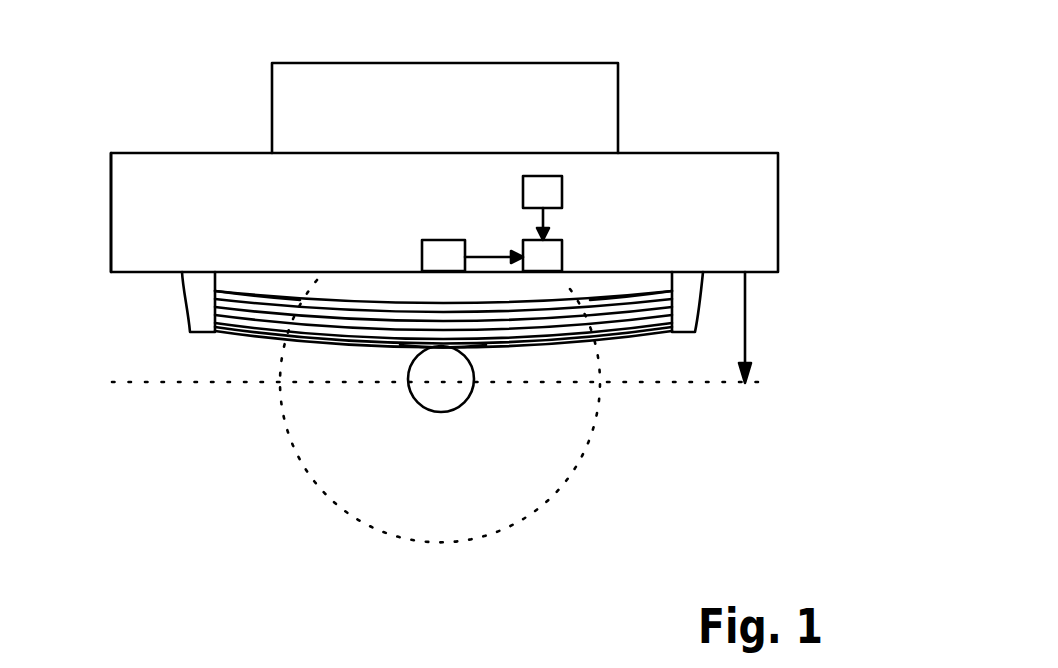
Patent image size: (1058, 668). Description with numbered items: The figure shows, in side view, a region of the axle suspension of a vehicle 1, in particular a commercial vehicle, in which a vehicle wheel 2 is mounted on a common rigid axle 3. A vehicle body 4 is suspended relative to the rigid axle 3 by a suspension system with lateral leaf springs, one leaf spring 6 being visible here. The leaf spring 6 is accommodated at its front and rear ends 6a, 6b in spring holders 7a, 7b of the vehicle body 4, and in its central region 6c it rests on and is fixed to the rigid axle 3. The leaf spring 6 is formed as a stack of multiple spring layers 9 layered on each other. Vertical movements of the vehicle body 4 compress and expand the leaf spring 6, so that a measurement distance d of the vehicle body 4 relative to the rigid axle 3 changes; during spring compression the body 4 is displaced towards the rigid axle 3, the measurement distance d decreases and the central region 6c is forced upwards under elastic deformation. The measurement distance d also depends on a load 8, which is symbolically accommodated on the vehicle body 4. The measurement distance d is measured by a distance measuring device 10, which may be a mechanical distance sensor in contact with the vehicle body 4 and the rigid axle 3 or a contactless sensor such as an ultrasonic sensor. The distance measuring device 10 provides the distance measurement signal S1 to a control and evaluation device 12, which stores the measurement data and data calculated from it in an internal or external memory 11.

The vehicle 1 is at (740, 152).
The vehicle wheel 2 is at (352, 487).
The rigid axle 3 is at (457, 402).
The vehicle body 4 is at (155, 170).
The leaf spring 6 is at (267, 333).
The front end of the leaf spring 6a is at (220, 332).
The rear end of the leaf spring 6b is at (663, 332).
The central region of the leaf spring 6c is at (425, 345).
The spring holder 7a is at (182, 290).
The spring holder 7b is at (682, 320).
The load 8 is at (618, 85).
The spring layer 9 is at (290, 337).
The distance measuring device 10 is at (425, 243).
The memory 11 is at (562, 190).
The control and evaluation device 12 is at (562, 256).
The distance measurement signal S1 is at (498, 254).
The measurement distance d is at (449, 327).